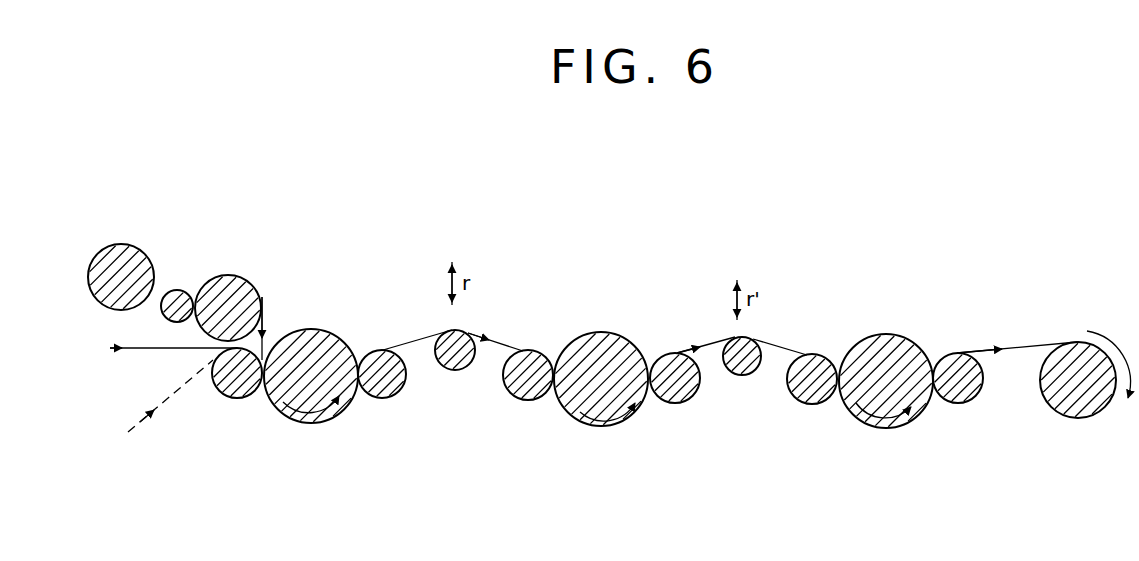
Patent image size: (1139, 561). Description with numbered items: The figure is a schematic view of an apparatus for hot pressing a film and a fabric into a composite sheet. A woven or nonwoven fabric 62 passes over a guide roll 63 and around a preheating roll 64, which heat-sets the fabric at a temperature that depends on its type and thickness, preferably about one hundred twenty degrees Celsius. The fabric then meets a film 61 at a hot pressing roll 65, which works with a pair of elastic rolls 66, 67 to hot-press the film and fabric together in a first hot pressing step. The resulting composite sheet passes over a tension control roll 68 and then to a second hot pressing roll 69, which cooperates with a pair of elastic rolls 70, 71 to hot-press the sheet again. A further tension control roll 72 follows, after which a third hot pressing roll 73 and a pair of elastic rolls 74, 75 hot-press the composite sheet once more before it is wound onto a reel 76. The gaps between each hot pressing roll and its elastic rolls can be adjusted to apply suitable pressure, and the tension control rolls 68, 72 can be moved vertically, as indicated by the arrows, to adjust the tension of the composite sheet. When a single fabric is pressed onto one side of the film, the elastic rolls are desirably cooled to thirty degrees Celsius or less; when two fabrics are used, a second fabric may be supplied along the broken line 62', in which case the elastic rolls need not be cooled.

The film 61 is at (146, 350).
The woven or nonwoven fabric 62 is at (179, 271).
The broken line 62' is at (170, 416).
The guide roll 63 is at (126, 243).
The preheating roll 64 is at (239, 277).
The hot pressing roll 65 is at (312, 406).
The elastic roll 66 is at (229, 387).
The elastic roll 67 is at (385, 393).
The tension control roll 68 is at (452, 363).
The second hot pressing roll 69 is at (597, 423).
The elastic roll 70 is at (523, 398).
The elastic roll 71 is at (672, 398).
The tension control roll 72 is at (747, 370).
The third hot pressing roll 73 is at (882, 424).
The elastic roll 74 is at (805, 402).
The elastic roll 75 is at (960, 403).
The reel 76 is at (1075, 418).